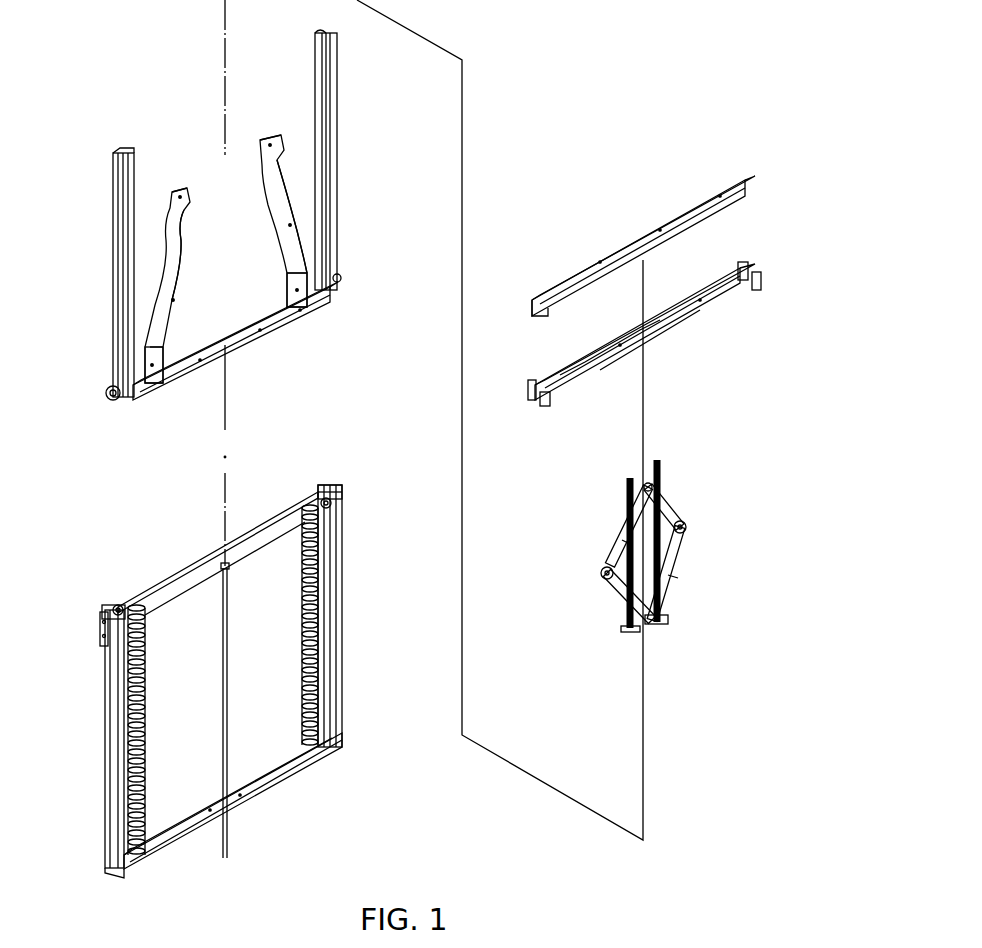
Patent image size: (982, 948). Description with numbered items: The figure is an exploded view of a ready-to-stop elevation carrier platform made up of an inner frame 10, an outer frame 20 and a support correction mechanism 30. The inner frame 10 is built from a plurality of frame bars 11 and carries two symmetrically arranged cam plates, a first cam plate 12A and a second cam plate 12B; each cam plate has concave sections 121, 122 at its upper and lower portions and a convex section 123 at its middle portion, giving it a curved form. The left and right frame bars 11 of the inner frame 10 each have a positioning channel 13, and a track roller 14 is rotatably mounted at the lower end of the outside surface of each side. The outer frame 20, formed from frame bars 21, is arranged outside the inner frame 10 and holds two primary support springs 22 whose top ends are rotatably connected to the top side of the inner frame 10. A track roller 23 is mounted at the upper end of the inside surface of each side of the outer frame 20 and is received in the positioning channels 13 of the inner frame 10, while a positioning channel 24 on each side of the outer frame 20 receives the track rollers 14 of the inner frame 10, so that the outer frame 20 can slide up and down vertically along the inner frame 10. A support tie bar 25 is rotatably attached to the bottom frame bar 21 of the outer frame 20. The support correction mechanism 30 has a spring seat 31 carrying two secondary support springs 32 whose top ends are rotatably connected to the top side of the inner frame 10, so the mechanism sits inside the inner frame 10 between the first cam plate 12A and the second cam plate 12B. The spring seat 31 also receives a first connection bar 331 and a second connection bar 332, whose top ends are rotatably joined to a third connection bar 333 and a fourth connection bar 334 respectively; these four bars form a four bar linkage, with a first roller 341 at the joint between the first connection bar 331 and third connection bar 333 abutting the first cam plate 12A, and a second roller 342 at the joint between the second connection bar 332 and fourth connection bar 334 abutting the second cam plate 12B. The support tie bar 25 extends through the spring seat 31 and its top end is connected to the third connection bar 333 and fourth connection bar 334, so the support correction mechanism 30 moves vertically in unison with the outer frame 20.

The inner frame 10 is at (112, 303).
The frame bars 11 is at (118, 160).
The first cam plate 12A is at (180, 190).
The second cam plate 12B is at (268, 137).
The concave section 121 is at (263, 158).
The concave section 122 is at (292, 278).
The convex section 123 is at (272, 195).
The positioning channel 13 is at (329, 35).
The track roller 14 is at (108, 398).
The outer frame 20 is at (103, 745).
The frame bars 21 is at (212, 548).
The primary support springs 22 is at (302, 615).
The track roller 23 is at (327, 496).
The positioning channel 24 is at (342, 490).
The support tie bar 25 is at (228, 680).
The support correction mechanism 30 is at (575, 480).
The spring seat 31 is at (662, 624).
The secondary support springs 32 is at (630, 476).
The first connection bar 331 is at (615, 595).
The second connection bar 332 is at (678, 572).
The third connection bar 333 is at (614, 535).
The fourth connection bar 334 is at (678, 508).
The first roller 341 is at (603, 570).
The second roller 342 is at (688, 530).